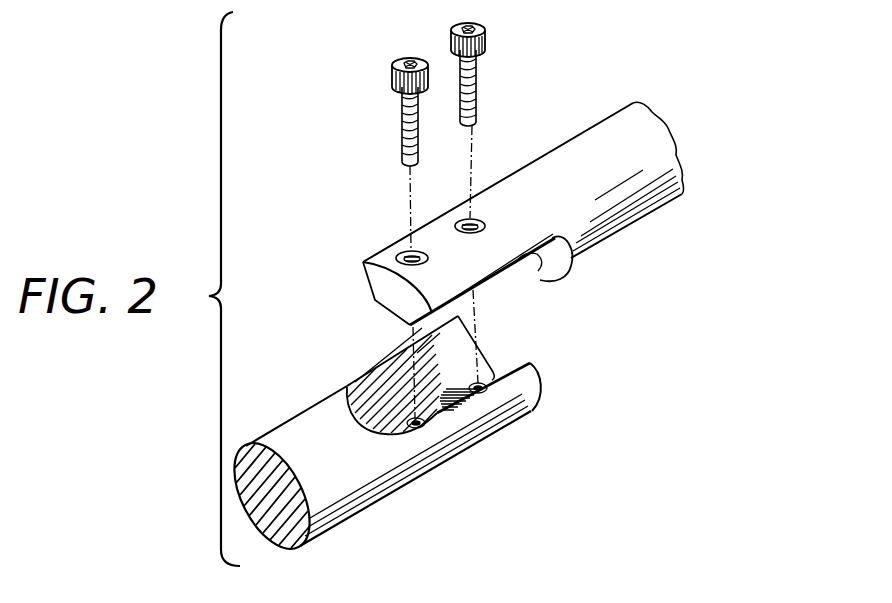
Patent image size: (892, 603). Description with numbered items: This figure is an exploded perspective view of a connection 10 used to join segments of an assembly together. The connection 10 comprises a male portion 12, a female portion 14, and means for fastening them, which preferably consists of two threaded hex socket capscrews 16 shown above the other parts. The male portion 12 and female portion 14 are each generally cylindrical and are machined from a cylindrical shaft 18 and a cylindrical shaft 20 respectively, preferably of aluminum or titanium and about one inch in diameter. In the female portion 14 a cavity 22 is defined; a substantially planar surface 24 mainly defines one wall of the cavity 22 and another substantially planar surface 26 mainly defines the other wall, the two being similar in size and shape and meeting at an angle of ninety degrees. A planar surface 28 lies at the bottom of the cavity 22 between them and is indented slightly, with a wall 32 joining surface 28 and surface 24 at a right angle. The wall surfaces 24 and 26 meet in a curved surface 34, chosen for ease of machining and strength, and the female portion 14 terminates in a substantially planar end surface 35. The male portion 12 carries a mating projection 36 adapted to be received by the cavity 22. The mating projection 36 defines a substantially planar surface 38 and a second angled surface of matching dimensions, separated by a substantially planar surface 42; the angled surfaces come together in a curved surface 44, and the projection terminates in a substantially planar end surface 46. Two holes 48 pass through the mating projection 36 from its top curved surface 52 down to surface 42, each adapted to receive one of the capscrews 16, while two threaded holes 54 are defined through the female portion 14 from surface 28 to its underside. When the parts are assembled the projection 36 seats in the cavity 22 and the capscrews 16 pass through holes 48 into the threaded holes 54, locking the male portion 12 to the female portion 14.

The connection 10 is at (618, 338).
The male portion 12 is at (643, 227).
The female portion 14 is at (494, 446).
The threaded hex socket capscrews 16 is at (391, 80).
The cylindrical shaft 18 is at (586, 123).
The cylindrical shaft 20 is at (283, 430).
The cavity 22 is at (498, 357).
The planar surface 24 is at (372, 376).
The planar surface 26 is at (530, 364).
The planar surface 28 is at (522, 356).
The wall 32 is at (415, 416).
The curved surface 34 is at (352, 383).
The planar end surface 35 is at (537, 388).
The mating projection 36 is at (404, 250).
The planar surface 38 is at (512, 264).
The planar surface 42 is at (410, 322).
The curved surface 44 is at (556, 278).
The planar end surface 46 is at (388, 289).
The holes 48 is at (477, 214).
The top surface 52 is at (388, 258).
The threaded holes 54 is at (481, 383).